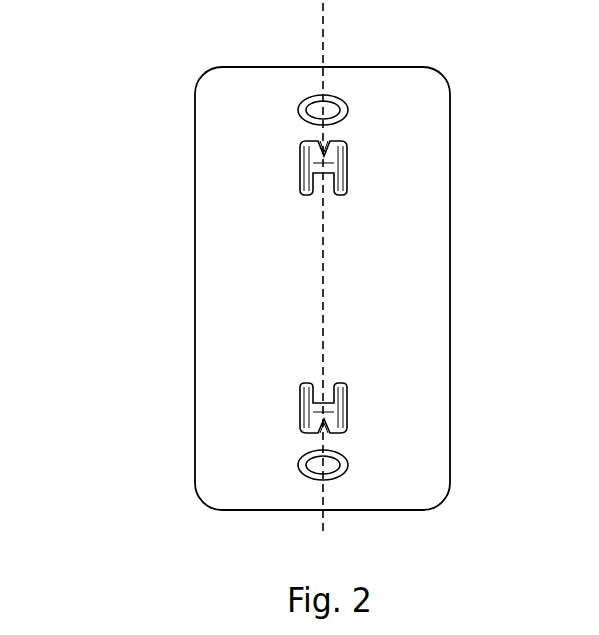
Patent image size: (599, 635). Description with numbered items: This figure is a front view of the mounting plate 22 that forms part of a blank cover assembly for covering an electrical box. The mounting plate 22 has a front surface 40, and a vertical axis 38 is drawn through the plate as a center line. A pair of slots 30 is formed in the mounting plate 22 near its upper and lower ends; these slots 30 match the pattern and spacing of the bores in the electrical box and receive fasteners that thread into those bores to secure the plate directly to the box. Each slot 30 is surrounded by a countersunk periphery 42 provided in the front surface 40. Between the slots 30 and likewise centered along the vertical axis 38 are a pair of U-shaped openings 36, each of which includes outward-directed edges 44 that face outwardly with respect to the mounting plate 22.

The mounting plate 22 is at (251, 288).
The slots 30 is at (323, 108).
The U-shaped openings 36 is at (336, 161).
The vertical axis 38 is at (320, 33).
The front surface 40 is at (362, 289).
The countersunk periphery 42 is at (345, 122).
The outward-directed edges 44 is at (322, 168).